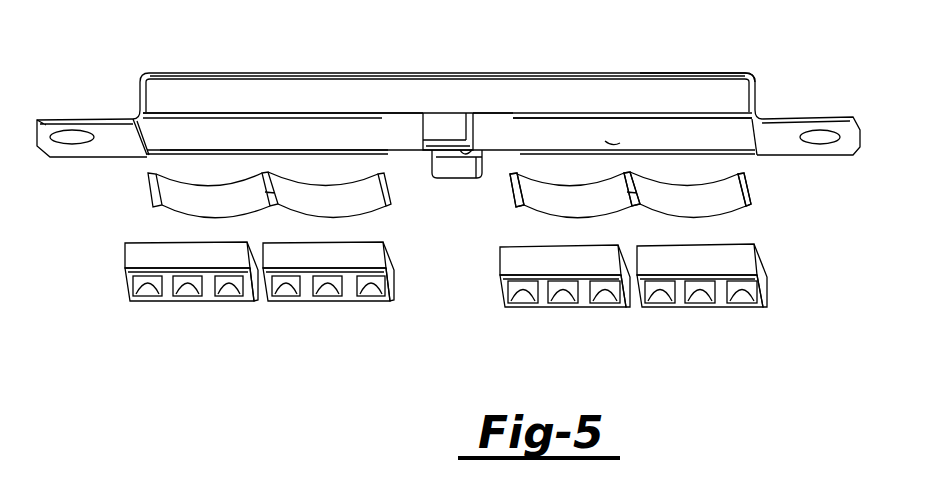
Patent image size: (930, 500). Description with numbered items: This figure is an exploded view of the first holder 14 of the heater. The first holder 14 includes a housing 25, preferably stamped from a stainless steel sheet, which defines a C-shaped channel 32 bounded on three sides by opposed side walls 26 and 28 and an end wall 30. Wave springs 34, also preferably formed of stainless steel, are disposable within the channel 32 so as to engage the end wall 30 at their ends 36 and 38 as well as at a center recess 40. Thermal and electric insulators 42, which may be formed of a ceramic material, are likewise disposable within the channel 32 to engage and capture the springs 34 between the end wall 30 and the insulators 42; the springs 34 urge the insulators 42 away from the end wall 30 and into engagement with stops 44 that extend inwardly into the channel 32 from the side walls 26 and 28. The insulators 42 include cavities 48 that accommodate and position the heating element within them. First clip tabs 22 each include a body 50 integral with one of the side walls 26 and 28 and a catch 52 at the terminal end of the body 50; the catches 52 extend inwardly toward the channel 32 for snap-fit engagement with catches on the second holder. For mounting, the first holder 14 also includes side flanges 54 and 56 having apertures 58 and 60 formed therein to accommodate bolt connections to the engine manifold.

The first holder 14 is at (725, 58).
The first clip tab 22 is at (442, 118).
The housing 25 is at (765, 77).
The side wall 26 is at (227, 88).
The side wall 28 is at (163, 138).
The end wall 30 is at (648, 70).
The channel 32 is at (214, 141).
The wave spring 34 is at (173, 202).
The end 36 is at (752, 195).
The end 38 is at (512, 205).
The center recess 40 is at (635, 175).
The thermal and electric insulator 42 is at (309, 313).
The stop 44 is at (606, 128).
The cavity 48 is at (152, 290).
The body 50 is at (452, 127).
The catch 52 is at (485, 150).
The side flange 54 is at (797, 117).
The side flange 56 is at (107, 117).
The aperture 58 is at (825, 144).
The aperture 60 is at (67, 145).